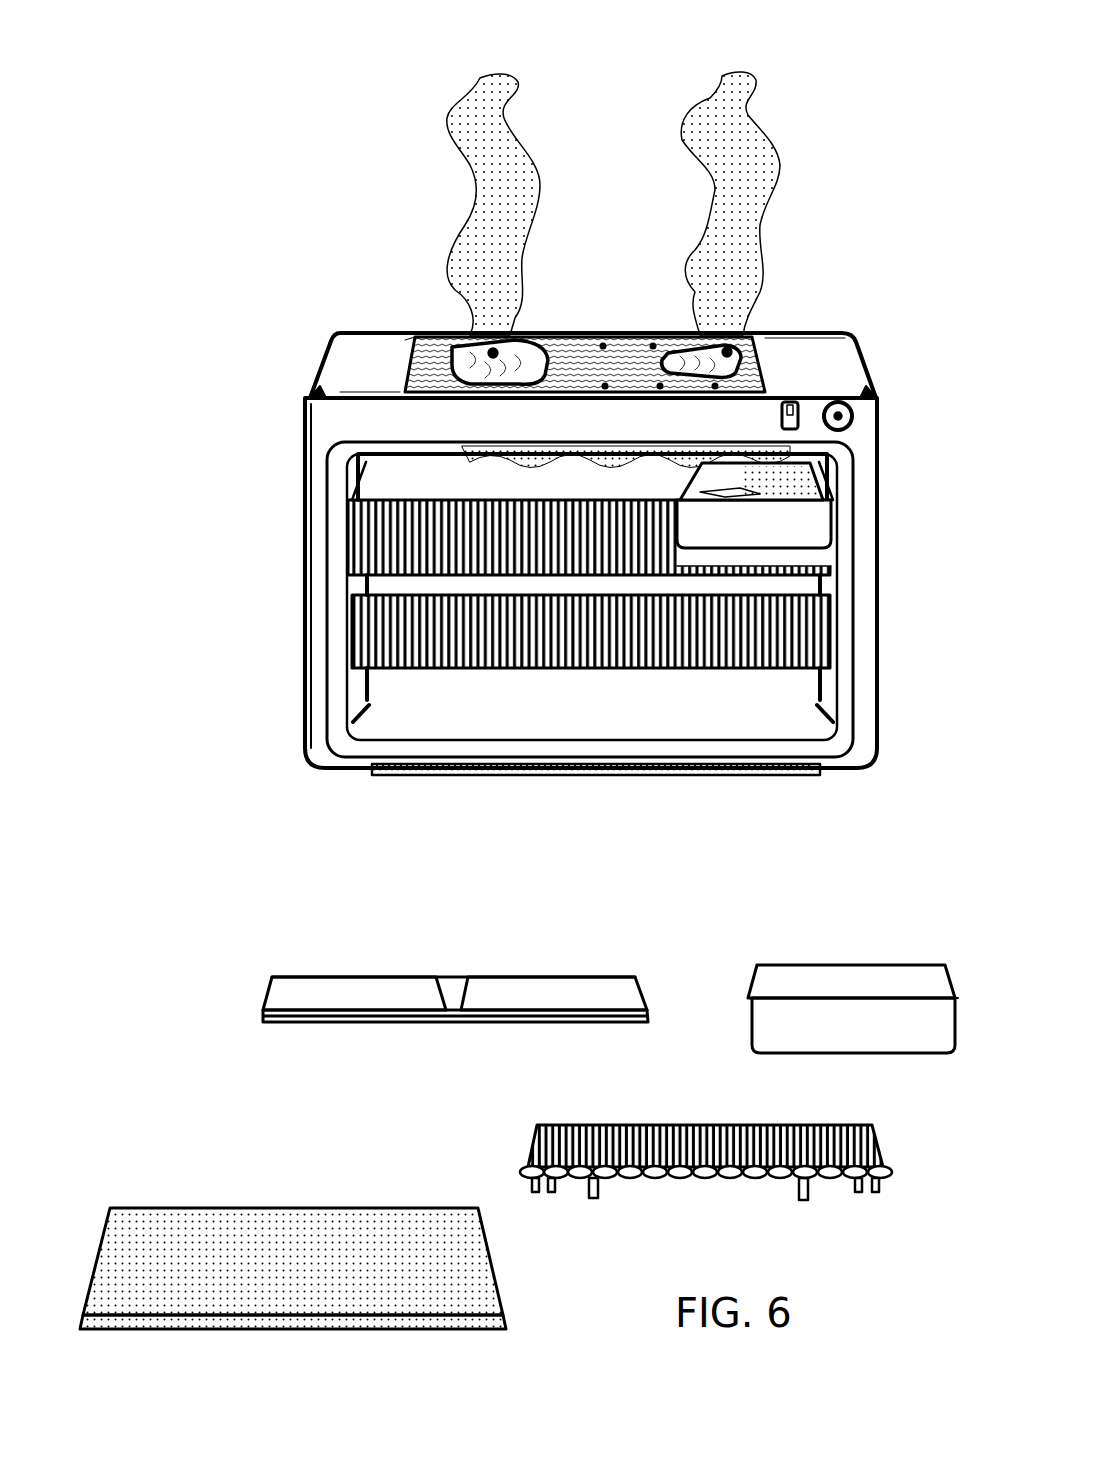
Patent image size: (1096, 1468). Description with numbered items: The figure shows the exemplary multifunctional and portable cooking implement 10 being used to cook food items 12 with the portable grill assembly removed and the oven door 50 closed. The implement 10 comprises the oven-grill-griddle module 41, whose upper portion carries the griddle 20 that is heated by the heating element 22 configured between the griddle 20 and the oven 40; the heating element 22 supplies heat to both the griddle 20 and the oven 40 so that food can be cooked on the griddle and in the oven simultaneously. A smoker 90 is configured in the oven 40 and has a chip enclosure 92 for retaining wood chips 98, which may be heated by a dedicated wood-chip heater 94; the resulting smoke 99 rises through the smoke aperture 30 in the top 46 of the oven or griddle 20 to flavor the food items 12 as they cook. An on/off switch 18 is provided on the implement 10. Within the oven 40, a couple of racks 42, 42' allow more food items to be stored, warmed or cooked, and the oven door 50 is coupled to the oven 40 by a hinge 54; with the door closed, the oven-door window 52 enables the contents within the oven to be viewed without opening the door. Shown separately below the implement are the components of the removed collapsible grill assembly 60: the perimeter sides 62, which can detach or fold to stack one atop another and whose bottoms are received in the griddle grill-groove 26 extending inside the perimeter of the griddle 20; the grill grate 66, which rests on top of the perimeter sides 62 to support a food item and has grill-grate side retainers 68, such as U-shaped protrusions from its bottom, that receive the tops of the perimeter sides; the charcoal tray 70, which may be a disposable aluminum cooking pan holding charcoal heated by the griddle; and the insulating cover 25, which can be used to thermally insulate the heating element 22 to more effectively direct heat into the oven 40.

The multifunctional and portable cooking implement 10 is at (288, 148).
The smoke 99 is at (500, 117).
The griddle 20 is at (575, 333).
The food item 12 is at (688, 332).
The heating element 22 is at (792, 331).
The top of the oven 46 is at (828, 360).
The griddle grill-groove 26 is at (405, 352).
The smoke aperture 30 is at (395, 379).
The on/off switch 18 is at (792, 398).
The oven 40 is at (343, 456).
The rack 42 is at (508, 510).
The rack 42' is at (508, 607).
The chip enclosure 92 is at (800, 460).
The wood chips 98 is at (790, 492).
The smoker 90 is at (827, 499).
The wood-chip heater 94 is at (810, 563).
The oven-grill-griddle module 41 is at (838, 620).
The hinge 54 is at (438, 775).
The oven door 50 is at (497, 703).
The oven-door window 52 is at (640, 700).
The collapsible grill assembly 60 is at (397, 1003).
The perimeter sides 62 is at (540, 1000).
The charcoal tray 70 is at (845, 992).
The grill grate 66 is at (761, 1193).
The grill-grate side retainers 68 is at (858, 1184).
The insulating cover 25 is at (455, 1278).